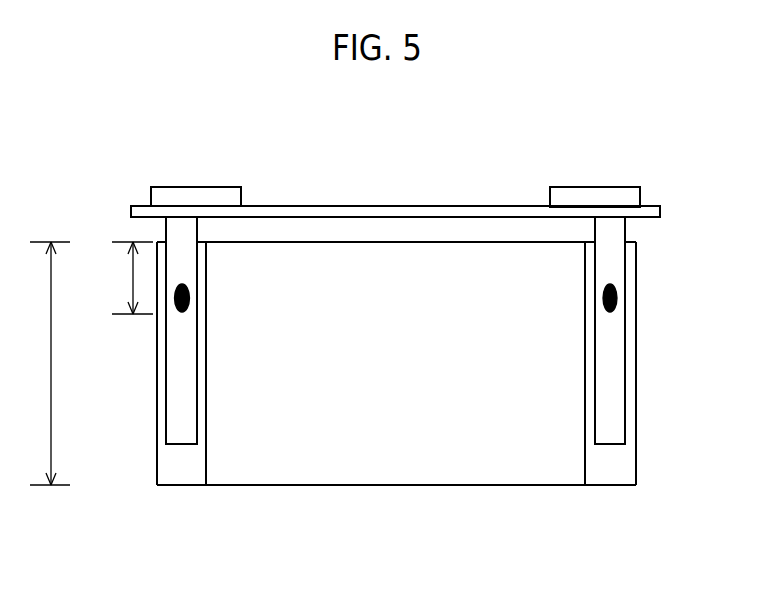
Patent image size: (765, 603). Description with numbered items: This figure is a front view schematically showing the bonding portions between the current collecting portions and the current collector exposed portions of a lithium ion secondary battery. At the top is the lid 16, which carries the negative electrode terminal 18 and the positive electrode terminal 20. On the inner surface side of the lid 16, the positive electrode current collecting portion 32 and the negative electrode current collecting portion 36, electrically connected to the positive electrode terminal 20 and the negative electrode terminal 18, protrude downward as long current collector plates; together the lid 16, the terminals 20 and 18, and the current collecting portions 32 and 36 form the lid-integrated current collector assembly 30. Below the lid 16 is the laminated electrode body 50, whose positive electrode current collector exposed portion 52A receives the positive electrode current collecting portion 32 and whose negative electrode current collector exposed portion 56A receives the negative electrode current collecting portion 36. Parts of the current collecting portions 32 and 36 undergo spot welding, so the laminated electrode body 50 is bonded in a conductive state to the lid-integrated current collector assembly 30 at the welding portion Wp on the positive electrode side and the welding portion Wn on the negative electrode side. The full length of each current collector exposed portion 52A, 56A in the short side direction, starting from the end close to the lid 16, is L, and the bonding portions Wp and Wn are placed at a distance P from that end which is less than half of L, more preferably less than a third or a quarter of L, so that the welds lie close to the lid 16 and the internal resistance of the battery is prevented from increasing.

The lid 16 is at (390, 206).
The negative electrode terminal 18 is at (193, 187).
The positive electrode terminal 20 is at (610, 187).
The lid-integrated current collector assembly 30 is at (473, 179).
The positive electrode current collecting portion 32 is at (612, 397).
The negative electrode current collecting portion 36 is at (178, 397).
The laminated electrode body 50 is at (491, 492).
The positive electrode current collector exposed portion 52A is at (623, 465).
The negative electrode current collector exposed portion 56A is at (165, 462).
The negative electrode side bonding portion Wn is at (182, 312).
The positive electrode side bonding portion Wp is at (617, 298).
The full length in short side direction of current collector exposed portion L is at (48, 363).
The distance from end close to lid P is at (131, 278).